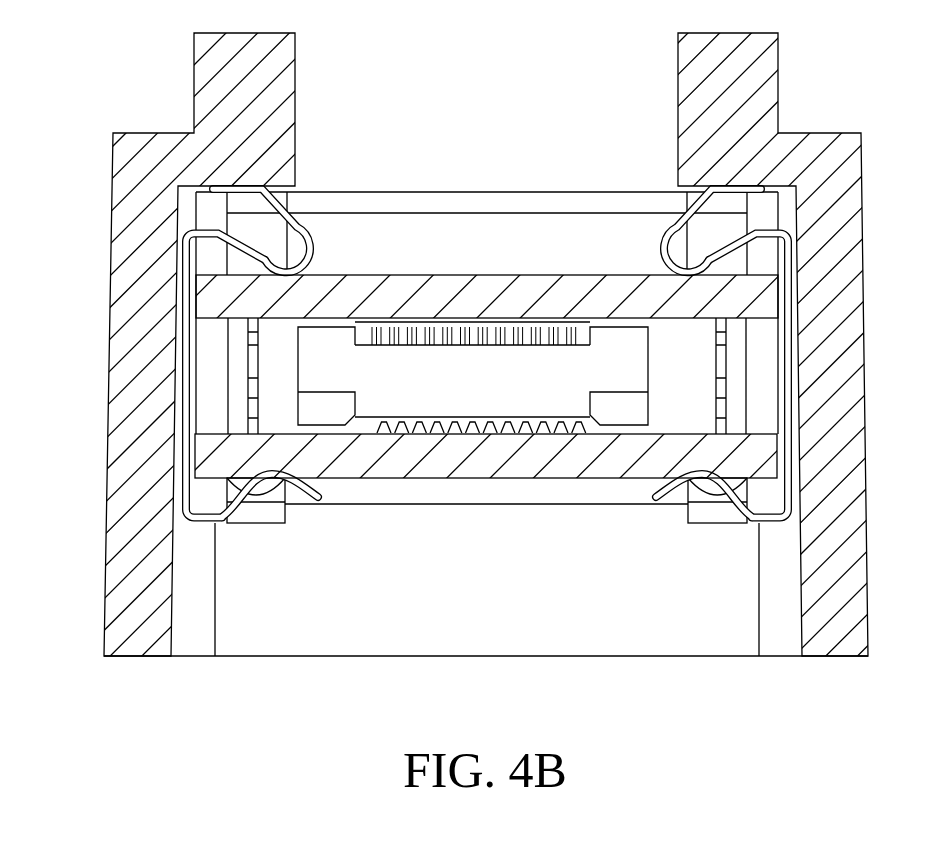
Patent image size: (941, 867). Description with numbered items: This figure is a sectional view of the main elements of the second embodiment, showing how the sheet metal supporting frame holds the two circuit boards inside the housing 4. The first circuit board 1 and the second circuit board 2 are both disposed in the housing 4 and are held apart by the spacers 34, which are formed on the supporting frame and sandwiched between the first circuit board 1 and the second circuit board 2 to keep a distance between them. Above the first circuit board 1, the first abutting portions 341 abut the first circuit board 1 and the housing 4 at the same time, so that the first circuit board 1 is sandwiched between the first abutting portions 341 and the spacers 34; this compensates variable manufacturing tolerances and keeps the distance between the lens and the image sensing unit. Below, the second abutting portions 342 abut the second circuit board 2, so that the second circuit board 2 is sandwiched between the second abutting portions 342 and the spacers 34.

The first circuit board 1 is at (750, 302).
The second circuit board 2 is at (752, 457).
The housing 4 is at (833, 375).
The spacer 34 is at (257, 382).
The first abutting portion 341 is at (762, 190).
The second abutting portion 342 is at (737, 488).